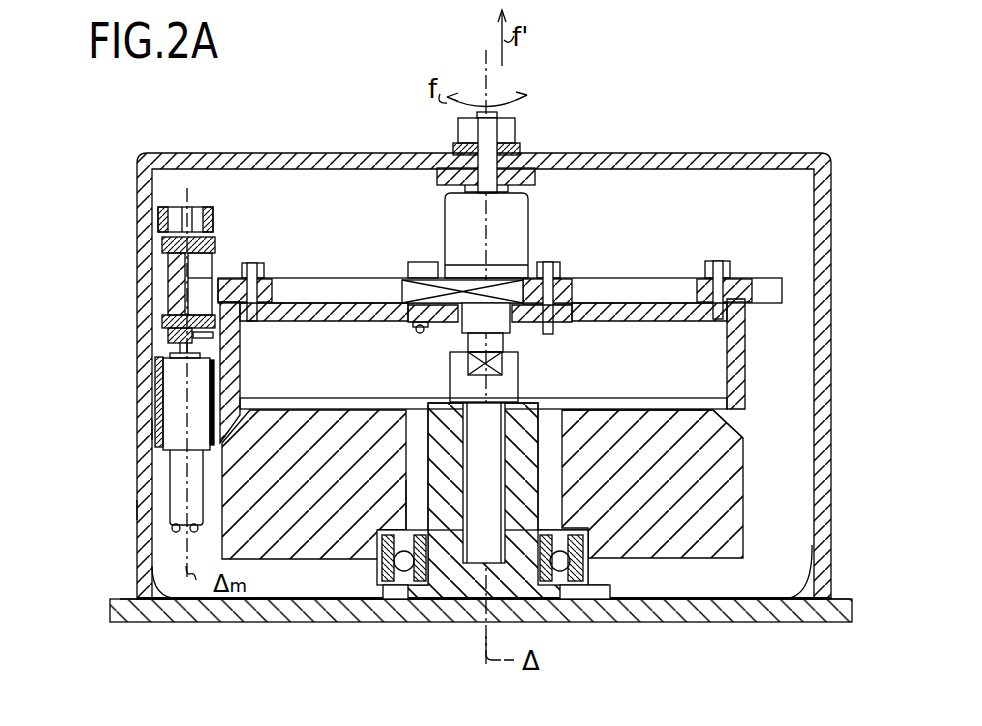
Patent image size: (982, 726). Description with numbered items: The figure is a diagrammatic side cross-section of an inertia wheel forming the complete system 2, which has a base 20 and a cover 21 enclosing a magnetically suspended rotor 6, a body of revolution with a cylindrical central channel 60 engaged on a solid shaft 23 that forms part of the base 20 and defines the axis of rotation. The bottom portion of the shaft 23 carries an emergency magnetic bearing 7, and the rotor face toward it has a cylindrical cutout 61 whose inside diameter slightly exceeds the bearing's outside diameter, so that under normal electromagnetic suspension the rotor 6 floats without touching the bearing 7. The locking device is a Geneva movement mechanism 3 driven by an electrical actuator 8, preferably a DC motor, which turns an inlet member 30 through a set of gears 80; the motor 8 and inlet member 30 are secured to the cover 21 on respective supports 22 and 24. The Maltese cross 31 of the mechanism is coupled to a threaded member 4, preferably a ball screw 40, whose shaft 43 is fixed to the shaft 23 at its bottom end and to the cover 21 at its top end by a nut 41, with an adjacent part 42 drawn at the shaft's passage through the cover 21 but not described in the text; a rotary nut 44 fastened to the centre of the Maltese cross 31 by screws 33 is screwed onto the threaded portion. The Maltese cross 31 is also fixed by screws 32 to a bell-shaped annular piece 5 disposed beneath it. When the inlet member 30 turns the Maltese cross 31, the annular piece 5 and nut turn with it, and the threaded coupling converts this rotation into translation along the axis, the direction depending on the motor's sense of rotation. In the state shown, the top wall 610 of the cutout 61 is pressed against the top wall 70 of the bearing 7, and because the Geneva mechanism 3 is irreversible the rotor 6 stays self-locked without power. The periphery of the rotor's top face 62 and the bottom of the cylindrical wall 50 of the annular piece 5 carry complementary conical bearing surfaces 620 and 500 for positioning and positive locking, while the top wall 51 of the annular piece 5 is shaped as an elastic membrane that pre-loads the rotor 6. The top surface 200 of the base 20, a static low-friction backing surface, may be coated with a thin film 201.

The complete system 2 is at (100, 420).
The base 20 is at (172, 613).
The cover 21 is at (137, 512).
The support 22 is at (140, 428).
The top surface 200 is at (120, 598).
The thin film 201 is at (148, 556).
The Geneva movement mechanism 3 is at (160, 316).
The support 24 is at (158, 216).
The inlet member 30 is at (165, 276).
The set of gears 80 is at (168, 337).
The electrical actuator 8 is at (163, 380).
The Maltese cross 31 is at (770, 278).
The screws 32 is at (245, 265).
The screws 33 is at (410, 263).
The threaded member 4 is at (487, 226).
The nut 41 is at (515, 135).
The washer flange 42 is at (437, 172).
The rotary nut 44 is at (447, 215).
The ball screw 40 is at (518, 380).
The shaft 43 is at (493, 473).
The annular piece 5 is at (503, 371).
The cylindrical wall 50 is at (236, 372).
The top wall 51 is at (370, 321).
The conical bearing surface 500 is at (262, 399).
The rotor 6 is at (509, 468).
The cylindrical central channel 60 is at (410, 455).
The cylindrical cutout 61 is at (360, 560).
The top face 62 is at (605, 400).
The top wall 610 is at (400, 512).
The conical bearing surface 620 is at (735, 425).
The top wall 70 is at (383, 545).
The emergency magnetic bearing 7 is at (454, 612).
The solid shaft 23 is at (506, 543).